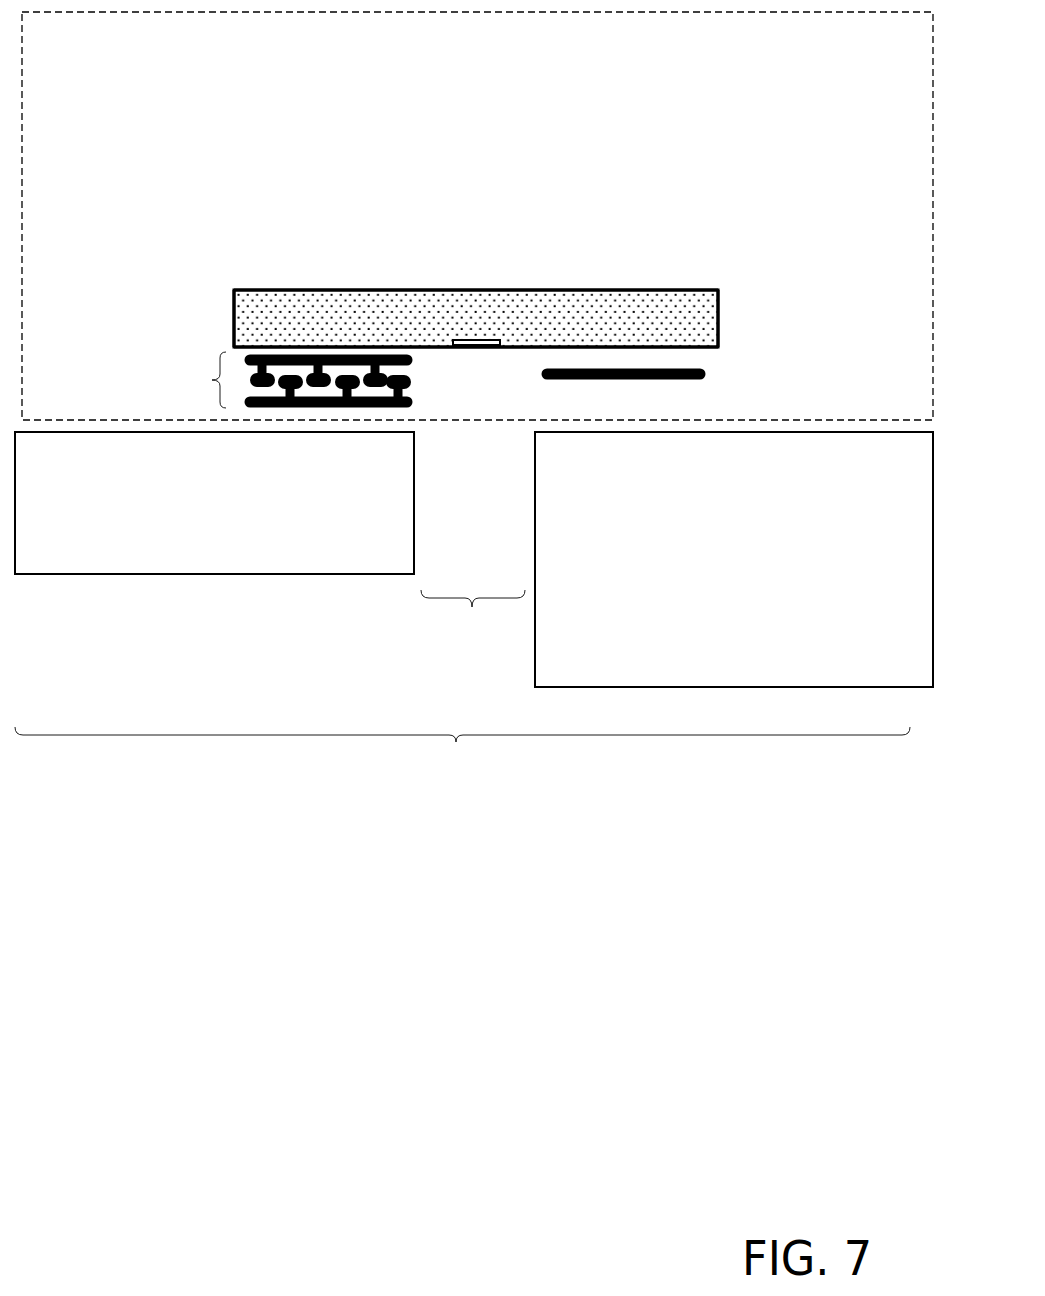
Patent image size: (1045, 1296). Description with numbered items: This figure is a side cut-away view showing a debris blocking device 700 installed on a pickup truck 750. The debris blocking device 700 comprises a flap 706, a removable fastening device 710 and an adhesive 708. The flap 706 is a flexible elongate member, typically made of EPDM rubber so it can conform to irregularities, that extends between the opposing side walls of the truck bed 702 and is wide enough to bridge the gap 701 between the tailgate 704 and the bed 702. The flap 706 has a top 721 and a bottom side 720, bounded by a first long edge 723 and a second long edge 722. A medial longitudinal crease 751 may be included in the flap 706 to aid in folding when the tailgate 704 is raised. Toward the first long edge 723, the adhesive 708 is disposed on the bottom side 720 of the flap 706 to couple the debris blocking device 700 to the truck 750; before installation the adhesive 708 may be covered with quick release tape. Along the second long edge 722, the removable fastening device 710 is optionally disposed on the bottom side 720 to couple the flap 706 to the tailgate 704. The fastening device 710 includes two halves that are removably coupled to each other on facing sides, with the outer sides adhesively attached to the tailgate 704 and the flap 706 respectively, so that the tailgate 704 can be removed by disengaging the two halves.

The debris blocking device 700 is at (477, 216).
The flap 706 is at (476, 318).
The top 721 is at (605, 290).
The bottom side 720 is at (433, 347).
The second long edge 722 is at (234, 298).
The first long edge 723 is at (719, 318).
The medial longitudinal crease 751 is at (475, 338).
The removable fastening device 710 is at (212, 380).
The adhesive 708 is at (707, 380).
The tailgate 704 is at (214, 503).
The bed 702 is at (734, 559).
The gap 701 is at (473, 632).
The truck 750 is at (462, 769).